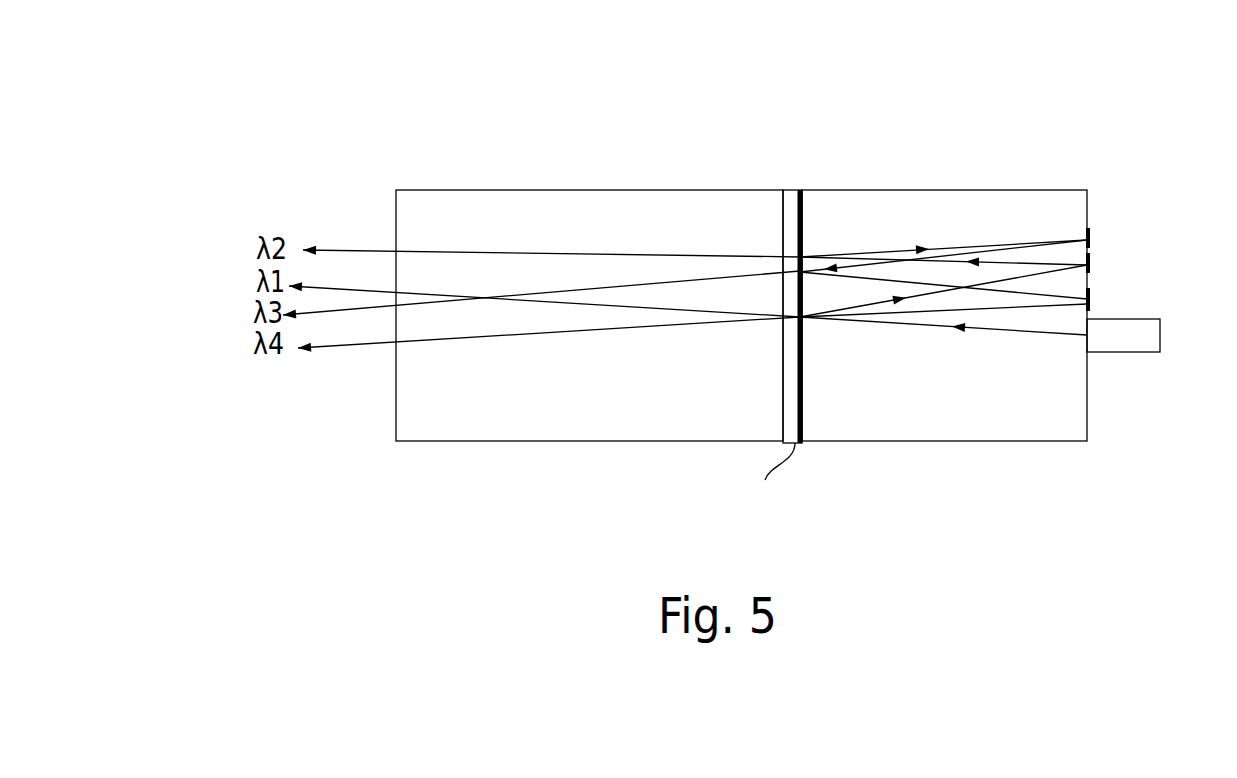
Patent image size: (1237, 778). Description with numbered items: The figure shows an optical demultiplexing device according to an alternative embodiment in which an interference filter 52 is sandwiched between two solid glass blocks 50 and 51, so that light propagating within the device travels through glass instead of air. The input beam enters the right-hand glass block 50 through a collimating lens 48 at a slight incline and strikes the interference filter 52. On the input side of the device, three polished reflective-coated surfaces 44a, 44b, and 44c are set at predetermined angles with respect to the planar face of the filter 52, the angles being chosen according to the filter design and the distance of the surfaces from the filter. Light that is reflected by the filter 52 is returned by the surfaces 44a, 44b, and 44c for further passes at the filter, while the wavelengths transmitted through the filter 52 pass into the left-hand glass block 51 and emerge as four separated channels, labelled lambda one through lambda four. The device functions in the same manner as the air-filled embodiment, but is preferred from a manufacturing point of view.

The solid glass block 51 is at (558, 190).
The interference filter 52 is at (788, 188).
The solid glass block 50 is at (973, 187).
The polished reflective surface 44a is at (1089, 228).
The polished reflective surface 44b is at (1089, 256).
The polished reflective surface 44c is at (1089, 291).
The collimating lens 48 is at (1165, 330).